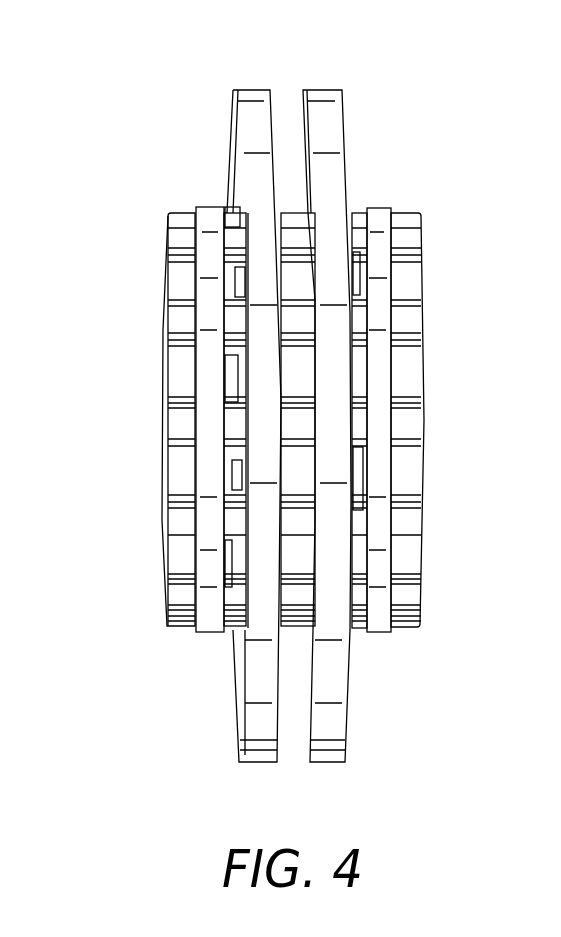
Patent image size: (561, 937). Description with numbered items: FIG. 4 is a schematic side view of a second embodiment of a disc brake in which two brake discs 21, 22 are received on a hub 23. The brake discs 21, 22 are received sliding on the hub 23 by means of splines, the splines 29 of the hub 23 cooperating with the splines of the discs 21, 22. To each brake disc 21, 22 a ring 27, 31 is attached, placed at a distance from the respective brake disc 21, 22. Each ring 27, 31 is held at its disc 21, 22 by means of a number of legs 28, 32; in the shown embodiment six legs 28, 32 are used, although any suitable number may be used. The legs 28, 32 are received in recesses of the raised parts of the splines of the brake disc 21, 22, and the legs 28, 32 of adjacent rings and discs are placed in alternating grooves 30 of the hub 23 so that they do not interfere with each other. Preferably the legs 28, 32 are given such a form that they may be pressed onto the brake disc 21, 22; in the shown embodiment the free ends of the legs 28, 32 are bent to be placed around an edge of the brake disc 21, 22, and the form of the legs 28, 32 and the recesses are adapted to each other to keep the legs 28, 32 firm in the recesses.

The brake disc 21 is at (252, 95).
The brake disc 22 is at (323, 95).
The hub 23 is at (464, 401).
The ring 27 is at (373, 620).
The legs 28 is at (353, 473).
The splines 29 is at (413, 318).
The grooves 30 is at (412, 372).
The ring 31 is at (213, 613).
The legs 32 is at (238, 387).